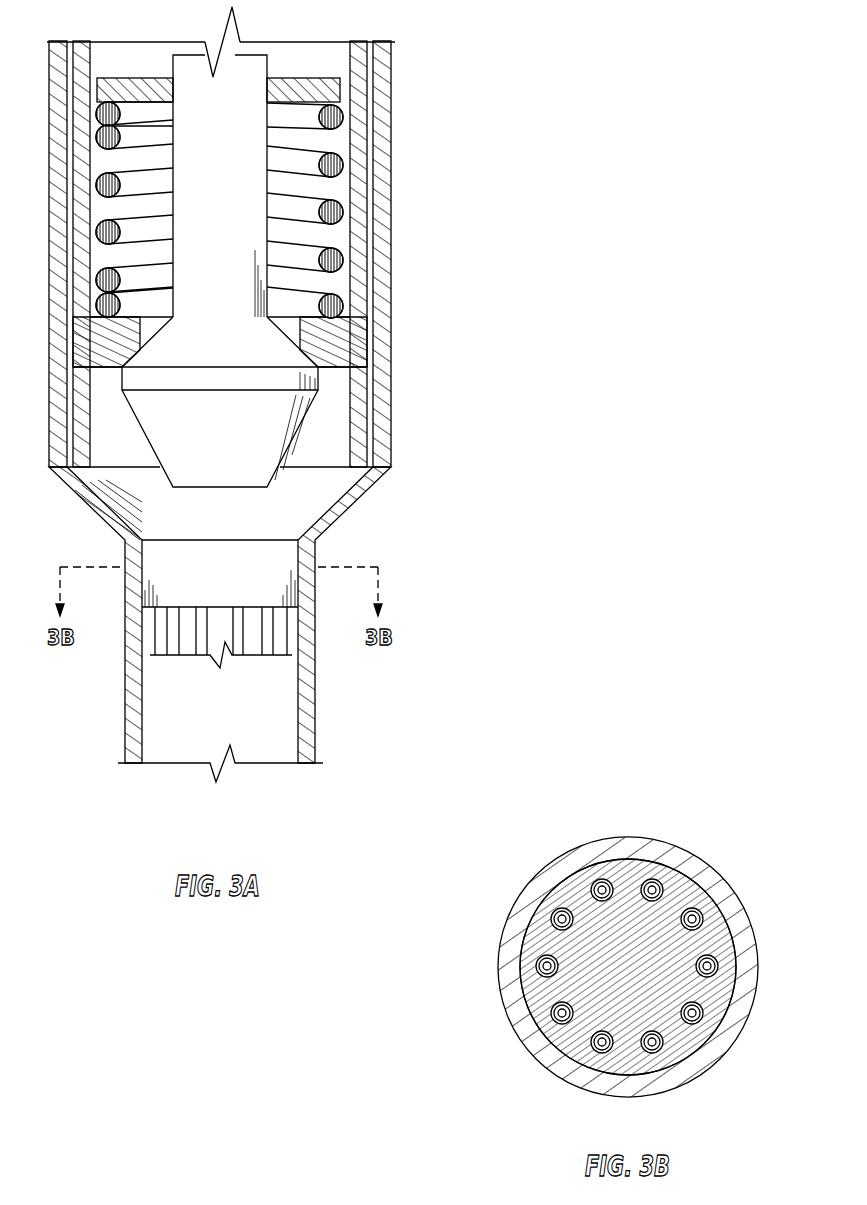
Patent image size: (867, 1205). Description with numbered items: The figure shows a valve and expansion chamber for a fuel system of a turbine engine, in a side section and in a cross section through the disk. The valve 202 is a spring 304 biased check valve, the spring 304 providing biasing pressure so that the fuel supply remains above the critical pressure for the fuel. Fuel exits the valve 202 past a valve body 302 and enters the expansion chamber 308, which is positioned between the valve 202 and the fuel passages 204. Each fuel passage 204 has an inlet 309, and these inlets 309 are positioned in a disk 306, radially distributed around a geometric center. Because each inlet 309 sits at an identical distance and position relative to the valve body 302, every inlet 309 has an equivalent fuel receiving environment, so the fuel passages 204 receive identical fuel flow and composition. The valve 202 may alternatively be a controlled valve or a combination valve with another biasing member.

In FIG. 3A, the valve 202 is at (428, 201).
In FIG. 3A, the fuel passages 204 is at (155, 645).
In FIG. 3B, the fuel passages 204 is at (540, 968).
In FIG. 3A, the valve body 302 is at (318, 380).
In FIG. 3A, the spring 304 is at (341, 258).
In FIG. 3A, the disk 306 is at (241, 586).
In FIG. 3B, the disk 306 is at (650, 836).
In FIG. 3A, the expansion chamber 308 is at (317, 500).
In FIG. 3B, the inlet 309 is at (718, 966).